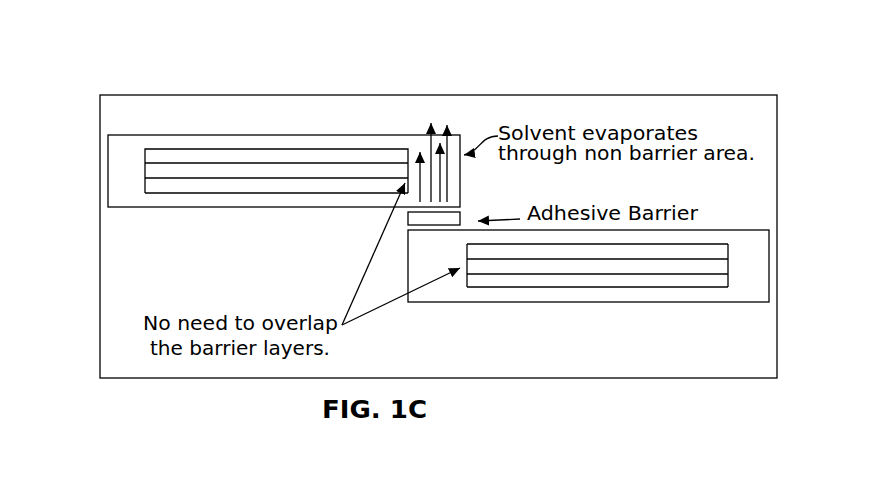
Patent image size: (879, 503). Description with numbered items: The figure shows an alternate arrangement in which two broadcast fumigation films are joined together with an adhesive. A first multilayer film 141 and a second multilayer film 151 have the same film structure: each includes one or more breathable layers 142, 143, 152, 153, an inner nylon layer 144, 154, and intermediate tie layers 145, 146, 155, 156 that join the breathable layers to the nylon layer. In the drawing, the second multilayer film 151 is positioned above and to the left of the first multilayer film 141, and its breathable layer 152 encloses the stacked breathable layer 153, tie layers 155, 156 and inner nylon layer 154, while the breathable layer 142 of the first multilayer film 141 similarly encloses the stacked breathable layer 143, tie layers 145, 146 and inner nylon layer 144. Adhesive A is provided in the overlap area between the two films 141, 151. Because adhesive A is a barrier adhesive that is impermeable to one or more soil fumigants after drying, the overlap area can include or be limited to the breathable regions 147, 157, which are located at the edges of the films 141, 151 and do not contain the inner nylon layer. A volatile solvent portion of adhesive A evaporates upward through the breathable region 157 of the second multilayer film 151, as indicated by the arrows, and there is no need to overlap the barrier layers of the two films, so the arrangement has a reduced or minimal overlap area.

The first multilayer film 141 is at (620, 273).
The breathable layer 142 is at (727, 236).
The breathable layer 143 is at (547, 295).
The inner nylon layer 144 is at (722, 268).
The intermediate tie layer 145 is at (722, 252).
The intermediate tie layer 146 is at (722, 280).
The breathable region 147 is at (492, 302).
The second multilayer film 151 is at (270, 149).
The breathable layer 152 is at (120, 148).
The breathable layer 153 is at (290, 198).
The inner nylon layer 154 is at (145, 172).
The intermediate tie layer 155 is at (145, 158).
The intermediate tie layer 156 is at (193, 185).
The breathable region 157 is at (460, 138).
The adhesive A is at (462, 222).